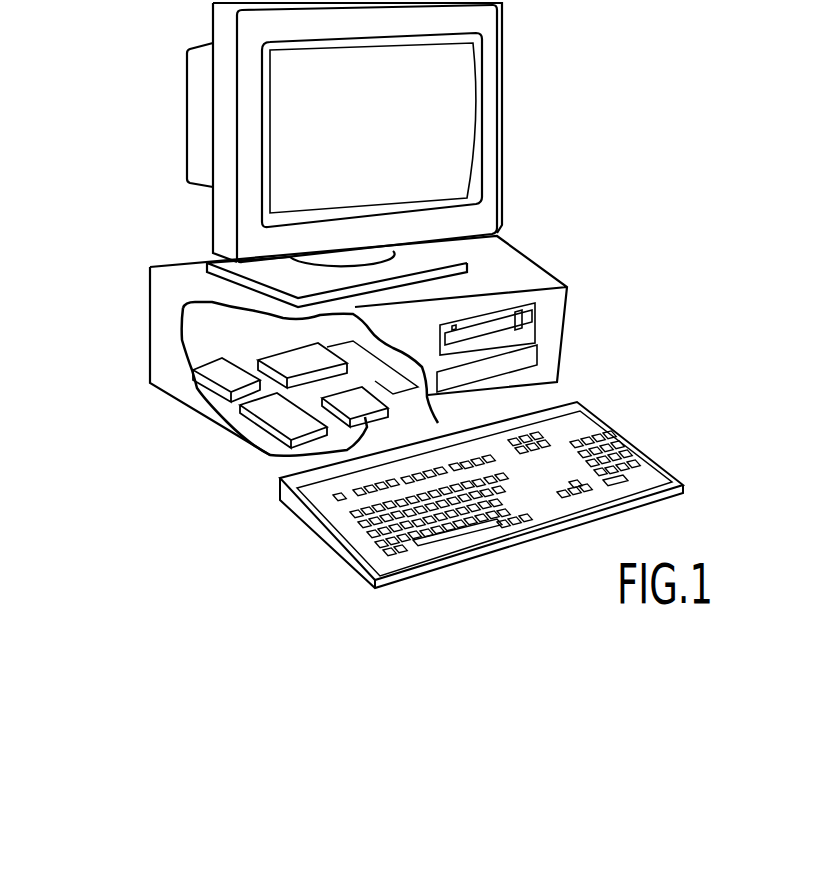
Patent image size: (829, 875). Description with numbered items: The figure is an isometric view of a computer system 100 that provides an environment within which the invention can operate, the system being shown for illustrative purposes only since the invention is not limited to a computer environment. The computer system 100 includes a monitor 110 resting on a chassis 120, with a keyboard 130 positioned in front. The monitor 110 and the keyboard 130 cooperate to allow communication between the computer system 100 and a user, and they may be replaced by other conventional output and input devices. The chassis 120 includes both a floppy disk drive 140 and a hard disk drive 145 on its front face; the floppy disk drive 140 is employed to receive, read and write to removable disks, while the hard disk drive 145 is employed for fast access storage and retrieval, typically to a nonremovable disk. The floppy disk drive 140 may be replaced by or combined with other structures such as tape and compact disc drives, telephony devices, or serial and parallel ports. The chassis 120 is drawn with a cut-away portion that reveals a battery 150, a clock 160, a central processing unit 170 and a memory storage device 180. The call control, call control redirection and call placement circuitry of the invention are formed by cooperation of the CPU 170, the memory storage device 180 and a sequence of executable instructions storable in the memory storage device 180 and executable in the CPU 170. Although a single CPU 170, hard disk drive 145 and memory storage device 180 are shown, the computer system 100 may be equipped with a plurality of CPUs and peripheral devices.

The computer system 100 is at (655, 153).
The monitor 110 is at (228, 223).
The chassis 120 is at (552, 283).
The keyboard 130 is at (580, 413).
The floppy disk drive 140 is at (532, 325).
The hard disk drive 145 is at (515, 362).
The battery 150 is at (263, 427).
The clock 160 is at (210, 392).
The central processing unit 170 is at (270, 458).
The memory storage device 180 is at (303, 356).